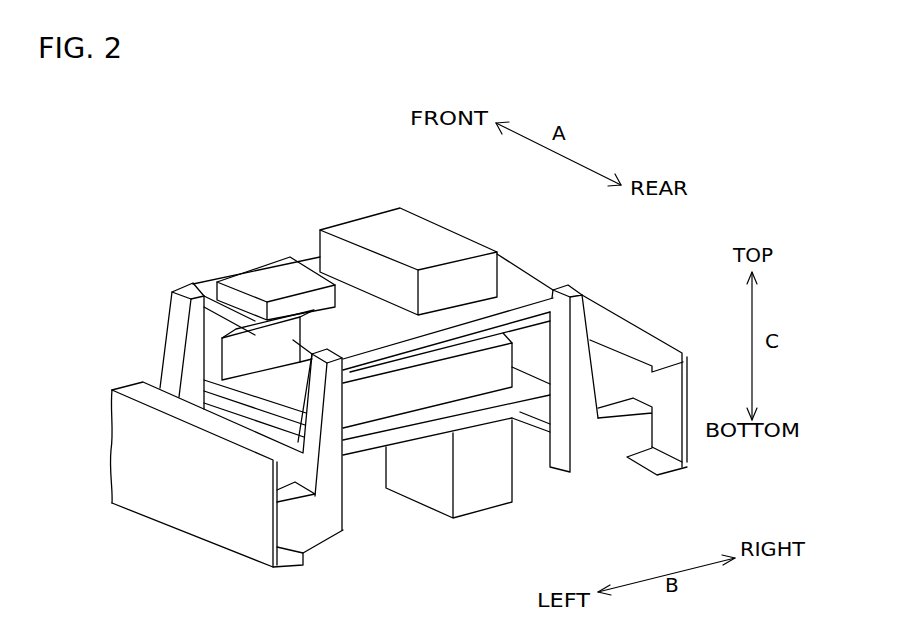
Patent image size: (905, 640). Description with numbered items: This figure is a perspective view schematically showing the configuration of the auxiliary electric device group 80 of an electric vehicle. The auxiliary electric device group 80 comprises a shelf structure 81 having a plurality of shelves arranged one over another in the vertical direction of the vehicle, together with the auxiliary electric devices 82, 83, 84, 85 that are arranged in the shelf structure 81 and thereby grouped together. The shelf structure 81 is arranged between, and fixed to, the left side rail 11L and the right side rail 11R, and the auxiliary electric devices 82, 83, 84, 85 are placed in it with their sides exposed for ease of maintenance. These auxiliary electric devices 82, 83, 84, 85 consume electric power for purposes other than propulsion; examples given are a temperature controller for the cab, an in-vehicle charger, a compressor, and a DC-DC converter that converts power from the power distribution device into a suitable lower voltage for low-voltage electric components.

The auxiliary electric device group 80 is at (187, 208).
The shelf structure 81 is at (518, 287).
The auxiliary electric device 82 is at (375, 225).
The auxiliary electric device 83 is at (268, 282).
The auxiliary electric device 84 is at (233, 357).
The auxiliary electric device 85 is at (483, 500).
The left side rail 11L is at (200, 520).
The right side rail 11R is at (630, 340).